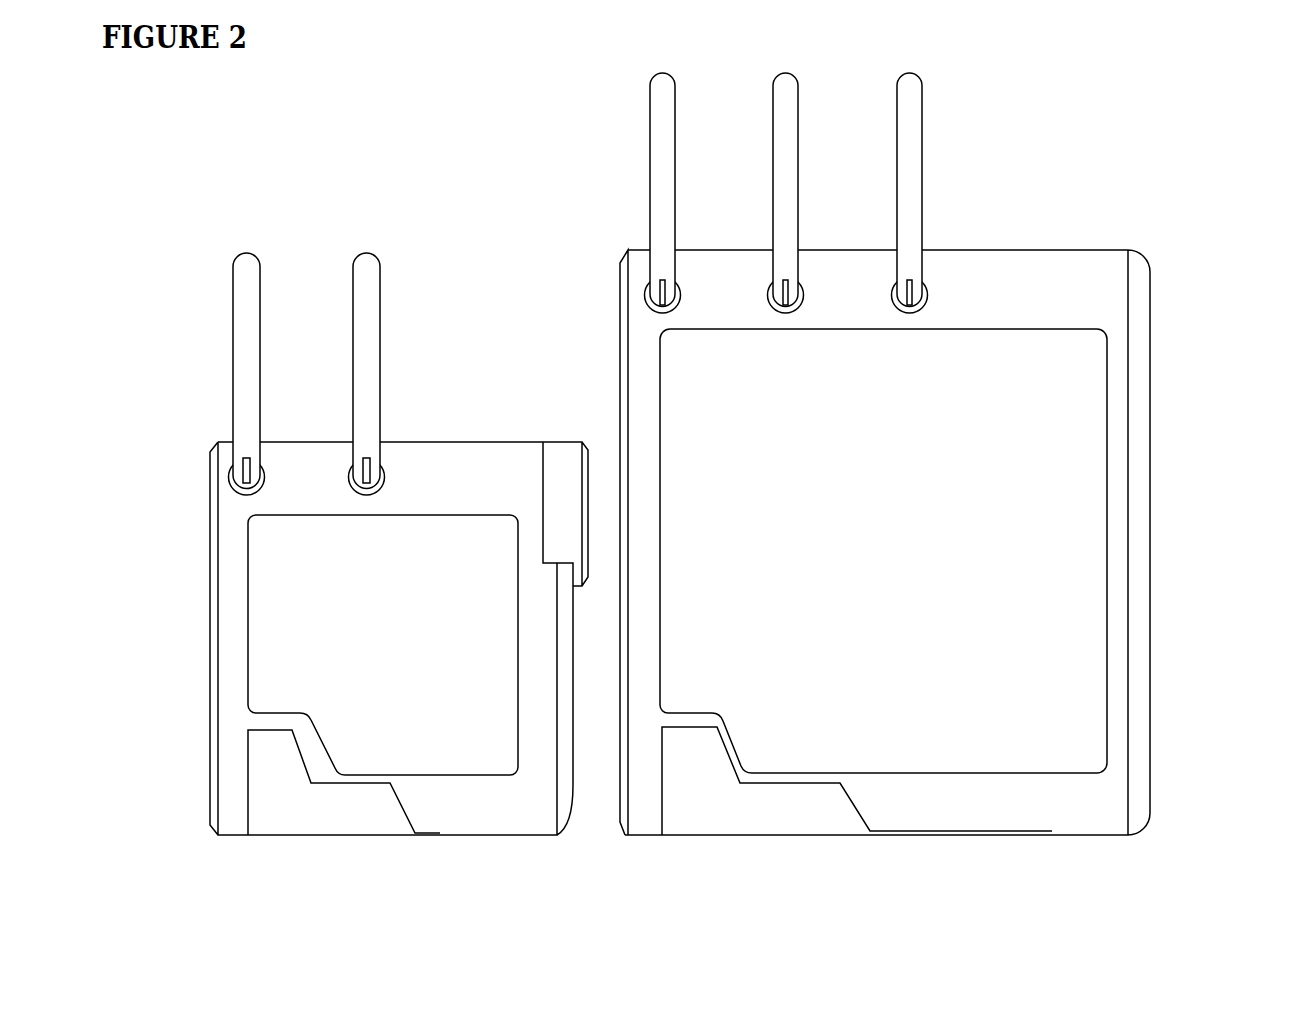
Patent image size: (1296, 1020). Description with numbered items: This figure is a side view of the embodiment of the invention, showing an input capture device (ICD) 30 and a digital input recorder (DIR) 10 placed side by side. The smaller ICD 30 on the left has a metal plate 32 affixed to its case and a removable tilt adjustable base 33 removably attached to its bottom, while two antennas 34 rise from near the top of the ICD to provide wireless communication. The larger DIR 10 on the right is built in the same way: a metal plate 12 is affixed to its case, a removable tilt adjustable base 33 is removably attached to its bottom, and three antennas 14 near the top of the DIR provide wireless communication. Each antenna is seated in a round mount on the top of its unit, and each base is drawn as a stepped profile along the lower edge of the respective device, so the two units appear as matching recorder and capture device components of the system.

The digital input recorder 10 is at (941, 452).
The metal plate 12 is at (961, 551).
The antennas 14 is at (933, 157).
The input capture device 30 is at (341, 544).
The metal plate 32 is at (312, 613).
The removable tilt adjustable base 33 is at (342, 807).
The antennas 34 is at (228, 347).